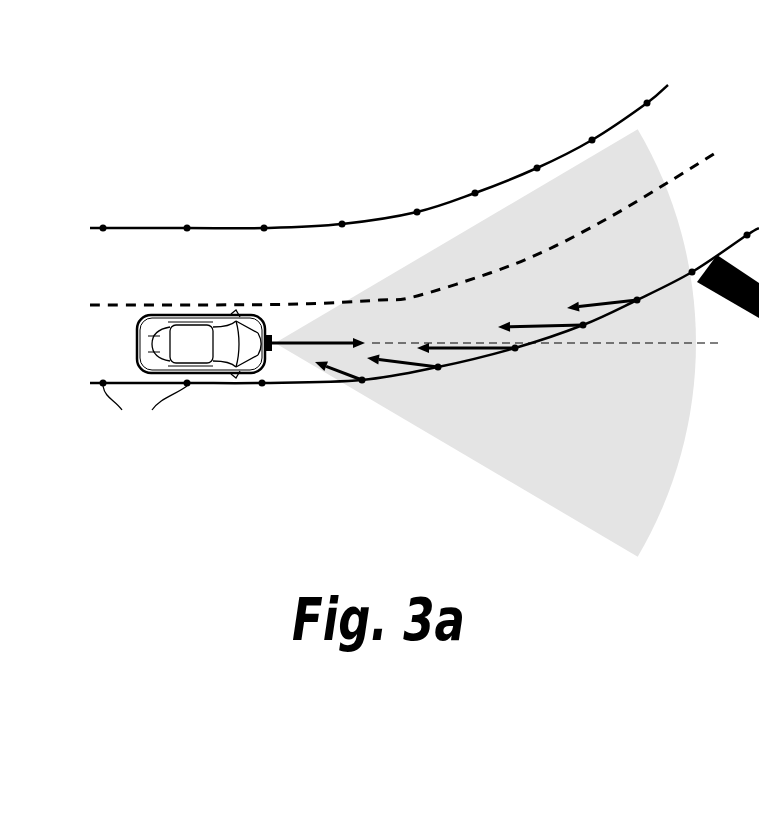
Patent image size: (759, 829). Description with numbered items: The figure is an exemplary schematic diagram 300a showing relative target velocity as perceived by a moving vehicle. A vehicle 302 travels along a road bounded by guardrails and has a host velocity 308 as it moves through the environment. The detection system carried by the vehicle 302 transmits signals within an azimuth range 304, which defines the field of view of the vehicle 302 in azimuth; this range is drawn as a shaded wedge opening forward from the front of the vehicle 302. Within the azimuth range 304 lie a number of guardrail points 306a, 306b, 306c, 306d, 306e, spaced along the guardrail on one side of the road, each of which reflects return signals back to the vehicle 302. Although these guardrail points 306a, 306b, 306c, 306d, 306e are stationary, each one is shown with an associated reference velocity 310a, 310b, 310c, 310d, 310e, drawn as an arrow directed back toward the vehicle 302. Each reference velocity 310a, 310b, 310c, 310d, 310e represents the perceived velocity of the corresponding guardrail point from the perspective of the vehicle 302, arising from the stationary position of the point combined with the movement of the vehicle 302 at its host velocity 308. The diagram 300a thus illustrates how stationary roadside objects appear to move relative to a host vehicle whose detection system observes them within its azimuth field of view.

The schematic diagram 300a is at (215, 95).
The vehicle 302 is at (187, 332).
The azimuth range 304 is at (580, 200).
The guardrail point 306a is at (361, 384).
The guardrail point 306b is at (439, 371).
The guardrail point 306c is at (516, 352).
The guardrail point 306d is at (583, 329).
The guardrail point 306e is at (637, 304).
The host velocity 308 is at (280, 337).
The reference velocity 310a is at (341, 385).
The reference velocity 310b is at (390, 368).
The reference velocity 310c is at (440, 343).
The reference velocity 310d is at (526, 324).
The reference velocity 310e is at (613, 300).